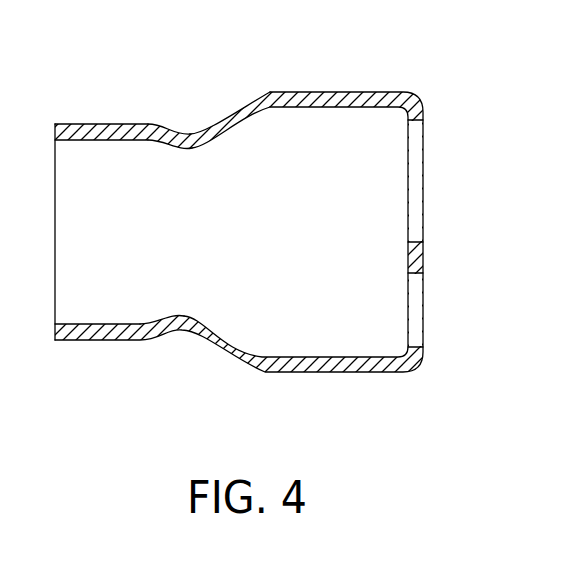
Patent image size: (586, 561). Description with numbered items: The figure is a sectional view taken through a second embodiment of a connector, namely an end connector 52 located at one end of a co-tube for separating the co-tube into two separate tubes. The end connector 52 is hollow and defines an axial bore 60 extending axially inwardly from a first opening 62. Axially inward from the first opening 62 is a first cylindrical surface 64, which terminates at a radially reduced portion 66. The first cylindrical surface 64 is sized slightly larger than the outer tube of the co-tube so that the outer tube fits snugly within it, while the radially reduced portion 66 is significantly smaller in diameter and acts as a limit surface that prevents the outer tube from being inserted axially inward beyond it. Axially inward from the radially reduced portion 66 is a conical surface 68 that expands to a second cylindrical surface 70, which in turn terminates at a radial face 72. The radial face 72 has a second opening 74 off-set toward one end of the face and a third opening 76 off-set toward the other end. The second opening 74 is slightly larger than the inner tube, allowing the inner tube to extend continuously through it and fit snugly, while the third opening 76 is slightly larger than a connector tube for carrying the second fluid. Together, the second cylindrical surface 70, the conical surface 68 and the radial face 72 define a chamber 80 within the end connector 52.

The end connector 52 is at (335, 91).
The axial bore 60 is at (111, 279).
The first opening 62 is at (55, 316).
The first cylindrical surface 64 is at (100, 142).
The radially reduced portion 66 is at (182, 151).
The conical surface 68 is at (228, 127).
The second cylindrical surface 70 is at (338, 108).
The radial face 72 is at (408, 258).
The second opening 74 is at (420, 316).
The third opening 76 is at (414, 174).
The chamber 80 is at (296, 321).